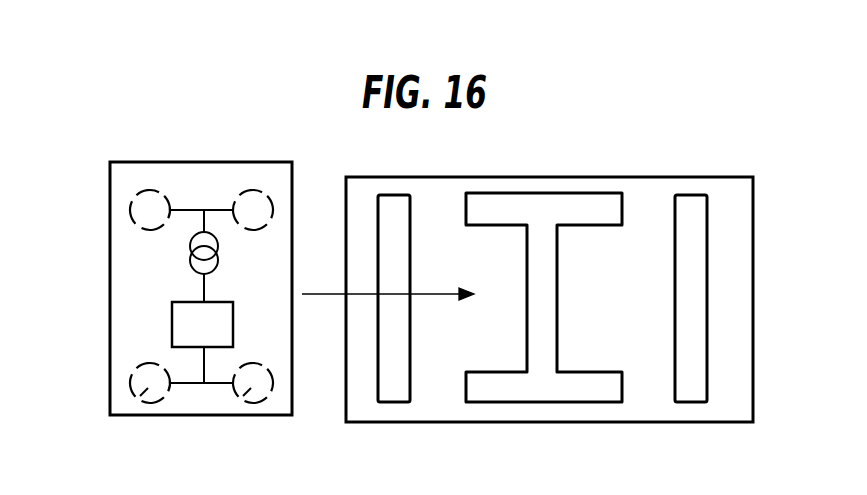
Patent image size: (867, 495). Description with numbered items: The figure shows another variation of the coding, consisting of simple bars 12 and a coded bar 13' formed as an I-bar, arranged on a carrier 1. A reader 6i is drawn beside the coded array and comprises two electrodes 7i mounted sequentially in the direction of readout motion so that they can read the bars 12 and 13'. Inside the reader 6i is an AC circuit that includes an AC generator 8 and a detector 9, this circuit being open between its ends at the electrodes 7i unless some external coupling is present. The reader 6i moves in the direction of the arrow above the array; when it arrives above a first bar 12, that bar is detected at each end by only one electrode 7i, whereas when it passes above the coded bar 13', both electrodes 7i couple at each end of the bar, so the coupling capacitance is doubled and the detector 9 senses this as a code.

The data carrier card 1 is at (738, 236).
The simple bars 12 is at (400, 377).
The coded bar 13' is at (556, 334).
The reader 6i is at (210, 400).
The electrodes 7i is at (260, 210).
The AC generator 8 is at (191, 273).
The detector 9 is at (172, 330).